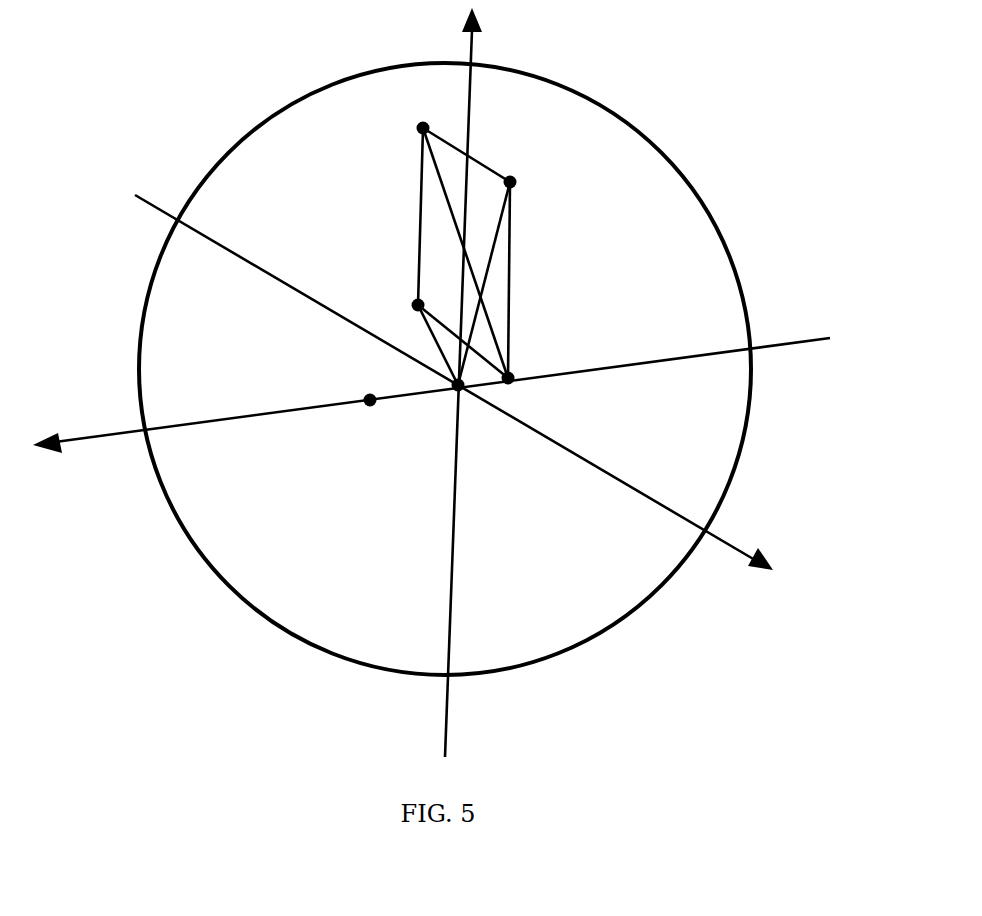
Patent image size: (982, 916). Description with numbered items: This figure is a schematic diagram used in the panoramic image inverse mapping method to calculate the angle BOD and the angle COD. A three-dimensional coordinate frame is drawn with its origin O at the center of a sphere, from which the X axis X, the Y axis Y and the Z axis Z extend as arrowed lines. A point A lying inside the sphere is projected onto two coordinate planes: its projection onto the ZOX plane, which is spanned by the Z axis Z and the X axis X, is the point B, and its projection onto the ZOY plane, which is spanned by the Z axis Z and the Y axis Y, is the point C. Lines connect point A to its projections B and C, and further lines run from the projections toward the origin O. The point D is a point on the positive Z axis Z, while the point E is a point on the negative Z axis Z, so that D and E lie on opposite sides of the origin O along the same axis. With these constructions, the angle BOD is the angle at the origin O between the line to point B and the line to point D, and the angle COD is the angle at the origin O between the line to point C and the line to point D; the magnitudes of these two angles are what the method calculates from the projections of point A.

The point A is at (406, 128).
The point B is at (401, 305).
The point C is at (530, 171).
The point D is at (358, 386).
The point E is at (525, 399).
The origin O is at (448, 405).
The X axis X is at (484, 405).
The Y axis Y is at (491, 378).
The Z axis Z is at (431, 432).